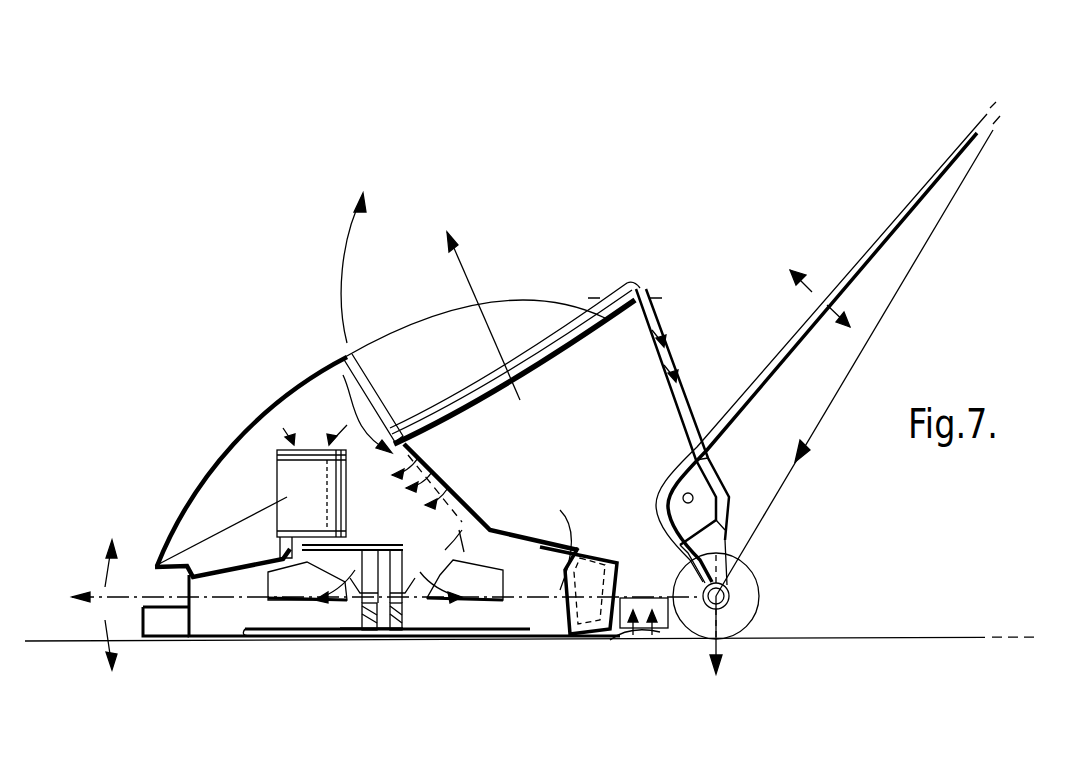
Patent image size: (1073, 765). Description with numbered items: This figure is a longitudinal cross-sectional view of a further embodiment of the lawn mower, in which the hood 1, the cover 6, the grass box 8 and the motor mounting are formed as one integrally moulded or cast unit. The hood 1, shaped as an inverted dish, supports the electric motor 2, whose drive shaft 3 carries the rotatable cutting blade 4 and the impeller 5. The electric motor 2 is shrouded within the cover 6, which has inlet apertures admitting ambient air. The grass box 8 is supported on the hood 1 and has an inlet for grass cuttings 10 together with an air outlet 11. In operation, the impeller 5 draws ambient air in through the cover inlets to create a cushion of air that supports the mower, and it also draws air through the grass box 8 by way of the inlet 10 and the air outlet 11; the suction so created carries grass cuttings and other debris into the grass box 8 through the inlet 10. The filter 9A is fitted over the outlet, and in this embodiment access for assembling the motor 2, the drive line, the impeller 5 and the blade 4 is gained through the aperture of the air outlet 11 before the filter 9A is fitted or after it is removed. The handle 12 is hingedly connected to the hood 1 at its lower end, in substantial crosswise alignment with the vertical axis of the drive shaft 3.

The hood 1 is at (623, 290).
The electric motor 2 is at (287, 470).
The drive shaft 3 is at (405, 608).
The rotatable cutting blade 4 is at (305, 628).
The impeller 5 is at (503, 585).
The cover 6 is at (260, 413).
The grass box 8 is at (677, 397).
The filter 9A is at (439, 420).
The inlet for grass cuttings 10 is at (645, 630).
The air outlet 11 is at (330, 368).
The handle 12 is at (768, 366).